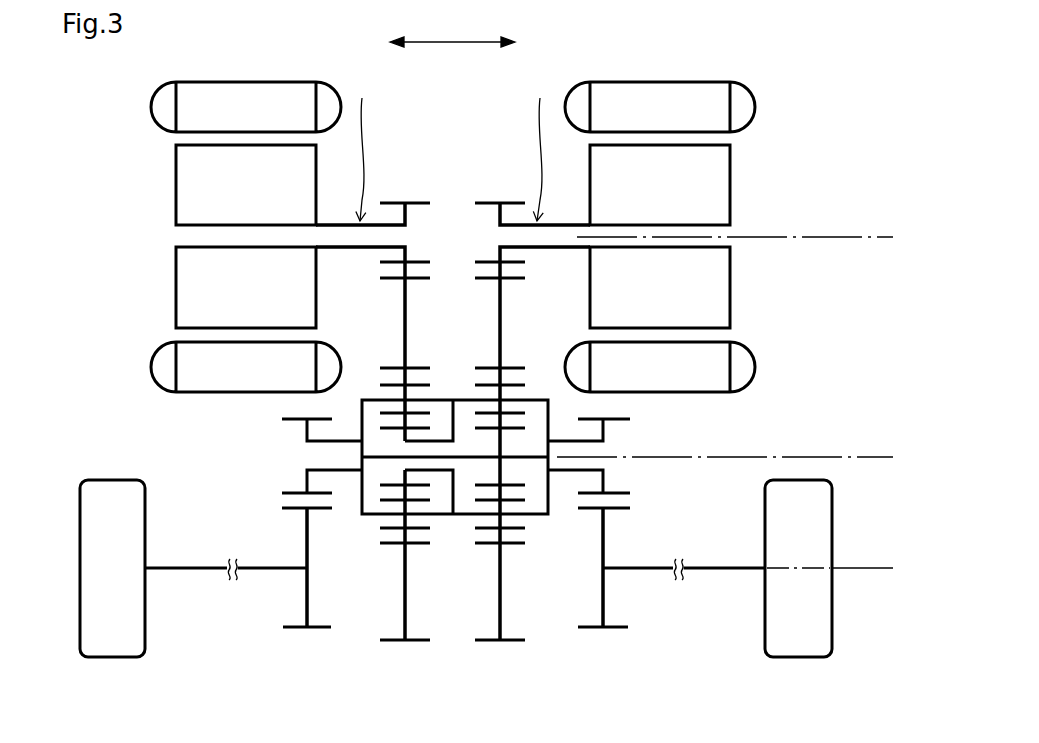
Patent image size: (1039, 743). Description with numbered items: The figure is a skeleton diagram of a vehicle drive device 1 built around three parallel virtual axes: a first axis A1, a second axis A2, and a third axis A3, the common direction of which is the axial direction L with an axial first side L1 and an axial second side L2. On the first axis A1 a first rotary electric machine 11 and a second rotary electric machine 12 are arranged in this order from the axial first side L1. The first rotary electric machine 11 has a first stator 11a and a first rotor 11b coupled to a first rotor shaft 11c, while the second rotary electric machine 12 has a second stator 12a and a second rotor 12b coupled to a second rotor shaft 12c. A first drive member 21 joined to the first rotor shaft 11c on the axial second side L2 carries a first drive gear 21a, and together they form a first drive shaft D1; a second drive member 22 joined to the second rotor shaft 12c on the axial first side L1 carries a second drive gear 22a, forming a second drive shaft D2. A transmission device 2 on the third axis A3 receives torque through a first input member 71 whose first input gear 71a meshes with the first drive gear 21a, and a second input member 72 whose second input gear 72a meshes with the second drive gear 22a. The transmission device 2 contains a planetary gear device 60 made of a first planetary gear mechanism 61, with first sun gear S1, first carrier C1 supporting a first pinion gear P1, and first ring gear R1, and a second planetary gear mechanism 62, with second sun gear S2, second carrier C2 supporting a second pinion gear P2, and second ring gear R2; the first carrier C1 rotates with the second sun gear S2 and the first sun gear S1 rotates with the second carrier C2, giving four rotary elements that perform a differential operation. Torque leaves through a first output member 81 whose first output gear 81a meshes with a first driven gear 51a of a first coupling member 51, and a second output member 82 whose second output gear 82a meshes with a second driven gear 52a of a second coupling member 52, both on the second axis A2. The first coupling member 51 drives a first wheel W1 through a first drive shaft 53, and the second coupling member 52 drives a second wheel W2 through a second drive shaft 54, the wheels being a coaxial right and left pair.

The vehicle drive device 1 is at (876, 97).
The transmission device 2 is at (257, 452).
The first rotary electric machine 11 is at (765, 135).
The first stator 11a is at (670, 90).
The first rotor 11b is at (720, 188).
The first rotor shaft 11c is at (653, 222).
The second rotary electric machine 12 is at (143, 135).
The second stator 12a is at (233, 90).
The second rotor 12b is at (187, 190).
The second rotor shaft 12c is at (241, 222).
The first drive member 21 is at (565, 222).
The first drive gear 21a is at (488, 198).
The second drive member 22 is at (328, 222).
The second drive gear 22a is at (392, 200).
The first coupling member 51 is at (623, 572).
The first driven gear 51a is at (617, 508).
The second coupling member 52 is at (270, 572).
The second driven gear 52a is at (290, 510).
The first drive shaft 53 is at (720, 572).
The second drive shaft 54 is at (182, 572).
The planetary gear device 60 is at (552, 697).
The first planetary gear mechanism 61 is at (520, 556).
The second planetary gear mechanism 62 is at (392, 560).
The first input member 71 is at (503, 317).
The first input gear 71a is at (503, 278).
The second input member 72 is at (407, 318).
The second input gear 72a is at (398, 279).
The first output member 81 is at (590, 438).
The first output gear 81a is at (628, 492).
The second output member 82 is at (307, 433).
The second output gear 82a is at (297, 490).
The first axis A1 is at (753, 239).
The second axis A2 is at (848, 571).
The third axis A3 is at (743, 459).
The axial direction L is at (453, 34).
The axial first side L1 is at (535, 44).
The axial second side L2 is at (370, 44).
The first drive shaft D1 is at (543, 146).
The second drive shaft D2 is at (368, 146).
The first pinion gear P1 is at (483, 381).
The second pinion gear P2 is at (388, 381).
The first sun gear S1 is at (535, 422).
The second sun gear S2 is at (390, 421).
The first carrier C1 is at (548, 500).
The second carrier C2 is at (362, 500).
The first ring gear R1 is at (487, 557).
The second ring gear R2 is at (383, 557).
The first wheel W1 is at (797, 658).
The second wheel W2 is at (112, 657).